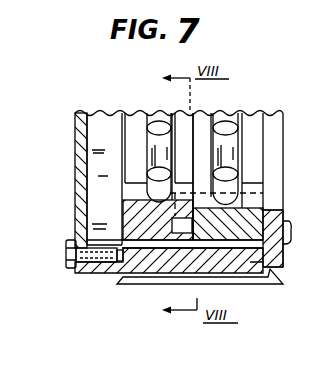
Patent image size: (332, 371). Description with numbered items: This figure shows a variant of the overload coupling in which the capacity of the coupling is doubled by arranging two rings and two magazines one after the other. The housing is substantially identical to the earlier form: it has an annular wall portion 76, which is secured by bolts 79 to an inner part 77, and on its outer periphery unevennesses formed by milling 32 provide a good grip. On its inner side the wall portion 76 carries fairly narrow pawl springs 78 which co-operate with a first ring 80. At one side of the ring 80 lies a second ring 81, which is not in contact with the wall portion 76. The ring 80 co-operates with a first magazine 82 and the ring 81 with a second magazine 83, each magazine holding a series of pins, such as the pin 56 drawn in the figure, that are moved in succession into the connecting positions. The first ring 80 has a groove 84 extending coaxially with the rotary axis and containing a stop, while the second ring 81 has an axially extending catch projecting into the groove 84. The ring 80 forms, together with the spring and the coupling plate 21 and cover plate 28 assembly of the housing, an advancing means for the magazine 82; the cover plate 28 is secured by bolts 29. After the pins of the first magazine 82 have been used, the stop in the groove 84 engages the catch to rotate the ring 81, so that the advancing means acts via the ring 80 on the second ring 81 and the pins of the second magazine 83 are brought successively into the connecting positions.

The coupling plate 21 is at (108, 112).
The magazine 82 is at (138, 112).
The sample tube 56 is at (229, 112).
The magazine 83 is at (250, 110).
The cover plate 28 is at (76, 143).
The ring 80 is at (122, 210).
The groove 84 is at (172, 226).
The second ring 81 is at (262, 197).
The inner part 77 is at (281, 223).
The bolts 79 is at (292, 247).
The bolts 29 is at (68, 269).
The annular wall portion 76 is at (121, 269).
The milling 32 is at (118, 276).
The pawl springs 78 is at (172, 276).